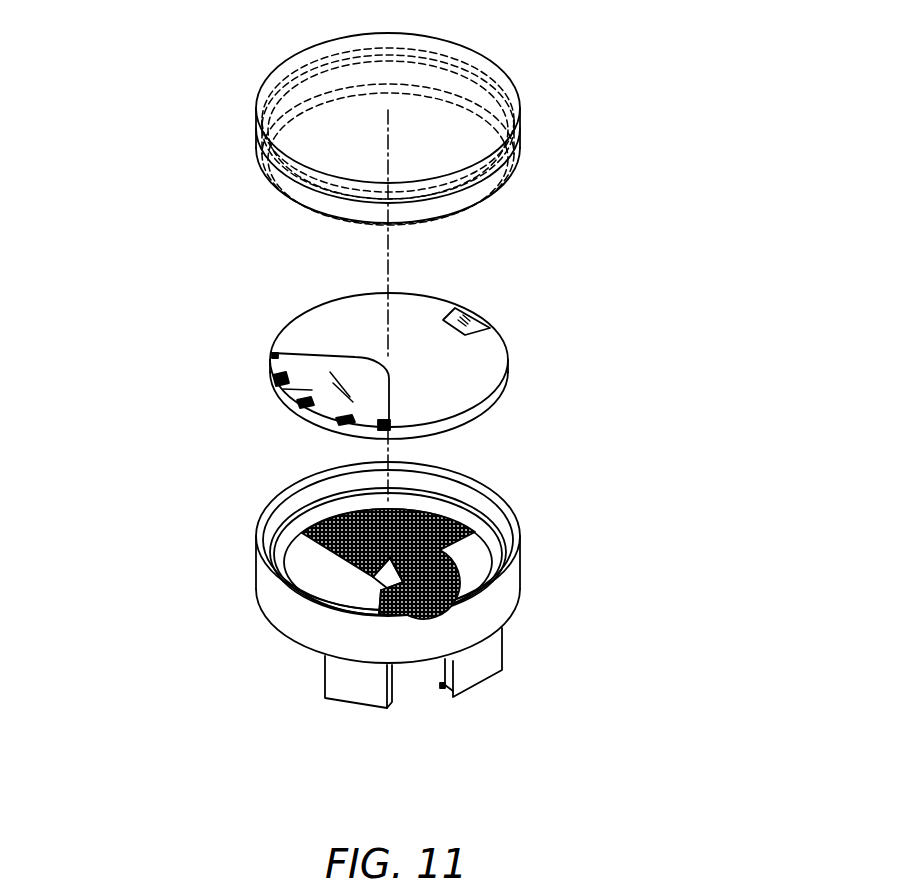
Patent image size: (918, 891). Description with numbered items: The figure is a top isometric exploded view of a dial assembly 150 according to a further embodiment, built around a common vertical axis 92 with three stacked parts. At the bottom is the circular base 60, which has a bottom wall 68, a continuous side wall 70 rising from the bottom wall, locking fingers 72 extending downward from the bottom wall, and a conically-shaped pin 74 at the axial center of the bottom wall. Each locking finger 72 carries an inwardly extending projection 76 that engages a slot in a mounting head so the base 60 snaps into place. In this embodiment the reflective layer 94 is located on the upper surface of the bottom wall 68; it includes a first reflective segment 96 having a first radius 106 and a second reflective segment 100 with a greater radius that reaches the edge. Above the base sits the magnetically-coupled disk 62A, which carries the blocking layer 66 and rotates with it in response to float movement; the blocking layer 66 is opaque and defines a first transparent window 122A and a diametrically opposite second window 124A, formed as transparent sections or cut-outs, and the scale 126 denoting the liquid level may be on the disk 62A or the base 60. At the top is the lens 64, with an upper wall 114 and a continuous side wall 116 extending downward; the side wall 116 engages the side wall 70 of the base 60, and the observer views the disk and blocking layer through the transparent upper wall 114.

The dial assembly 150 is at (99, 278).
The lens 64 is at (257, 130).
The upper wall 114 is at (490, 78).
The side wall 116 is at (507, 173).
The central axis 92 is at (390, 250).
The blocking layer 66 is at (312, 305).
The second transparent window 124A is at (477, 312).
The scale 126 is at (278, 372).
The first transparent window 122A is at (312, 390).
The disk 62A is at (508, 368).
The base 60 is at (257, 570).
The reflective layer 94 is at (322, 522).
The second reflective segment 100 is at (437, 517).
The bottom wall 68 is at (485, 548).
The side wall 70 is at (518, 568).
The conically-shaped pin 74 is at (381, 579).
The first reflective segment 96 is at (513, 600).
The first radius 106 is at (378, 610).
The locking fingers 72 is at (347, 690).
The inwardly extending projection 76 is at (443, 685).